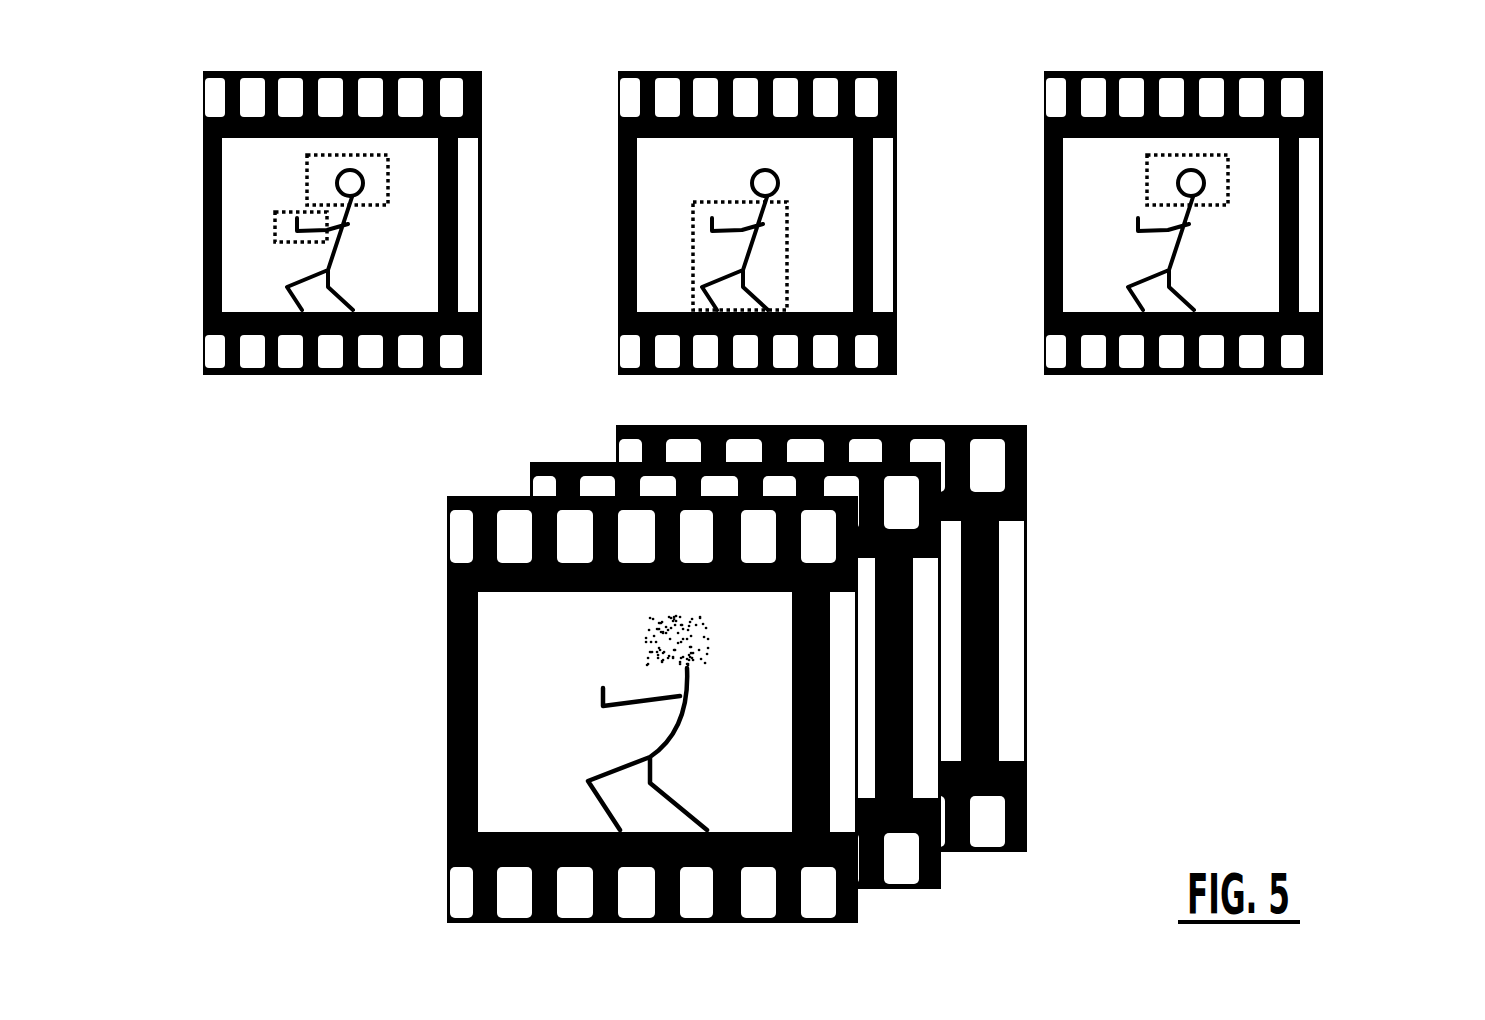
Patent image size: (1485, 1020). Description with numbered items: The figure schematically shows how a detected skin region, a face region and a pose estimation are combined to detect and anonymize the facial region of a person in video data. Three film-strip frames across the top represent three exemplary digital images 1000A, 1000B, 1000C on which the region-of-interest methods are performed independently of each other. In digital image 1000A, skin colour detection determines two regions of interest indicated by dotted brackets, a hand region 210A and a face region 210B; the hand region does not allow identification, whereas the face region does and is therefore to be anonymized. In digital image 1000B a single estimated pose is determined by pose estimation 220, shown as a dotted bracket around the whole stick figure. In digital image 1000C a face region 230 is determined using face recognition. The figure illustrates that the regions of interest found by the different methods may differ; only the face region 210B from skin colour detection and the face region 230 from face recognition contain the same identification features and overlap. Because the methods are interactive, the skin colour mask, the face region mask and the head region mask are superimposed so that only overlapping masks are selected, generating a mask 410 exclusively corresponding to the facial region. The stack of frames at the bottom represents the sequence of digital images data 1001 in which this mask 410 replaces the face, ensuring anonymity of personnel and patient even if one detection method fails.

The digital image 1000A is at (291, 337).
The digital image 1000B is at (663, 200).
The digital image 1000C is at (1219, 223).
The digital images data 1001 is at (623, 674).
The hand region 210A is at (275, 223).
The face region 210B is at (318, 182).
The pose estimation 220 is at (777, 258).
The face region 230 is at (1158, 170).
The mask 410 is at (647, 638).